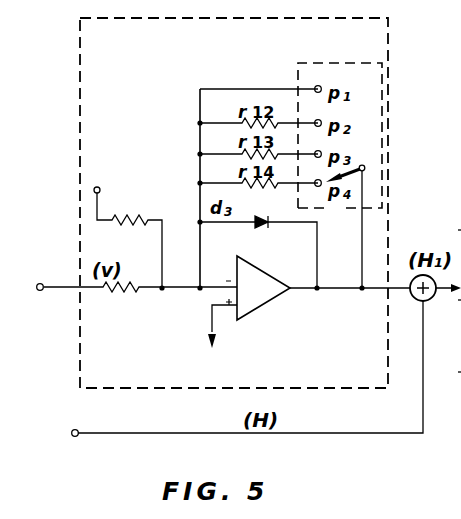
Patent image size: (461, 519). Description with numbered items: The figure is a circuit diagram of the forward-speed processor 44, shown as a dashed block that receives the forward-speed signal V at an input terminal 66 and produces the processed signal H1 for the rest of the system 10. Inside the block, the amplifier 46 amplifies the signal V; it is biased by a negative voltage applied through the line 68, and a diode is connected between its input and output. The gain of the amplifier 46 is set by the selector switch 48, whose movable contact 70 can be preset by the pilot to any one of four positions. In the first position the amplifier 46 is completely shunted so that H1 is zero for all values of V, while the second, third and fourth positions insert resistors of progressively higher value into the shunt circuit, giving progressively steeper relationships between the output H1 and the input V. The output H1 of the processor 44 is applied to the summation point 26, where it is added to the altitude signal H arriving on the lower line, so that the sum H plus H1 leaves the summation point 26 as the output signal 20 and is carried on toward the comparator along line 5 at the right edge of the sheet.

The processor 44 is at (207, 203).
The selector switch 48 is at (333, 62).
The movable contact 70 is at (365, 168).
The line 68 is at (100, 175).
The input terminal 66 is at (32, 289).
The amplifier 46 is at (285, 290).
The summation point 26 is at (414, 297).
The output signal 20 is at (453, 217).
The system 10 is at (454, 314).
The line 5 is at (457, 359).